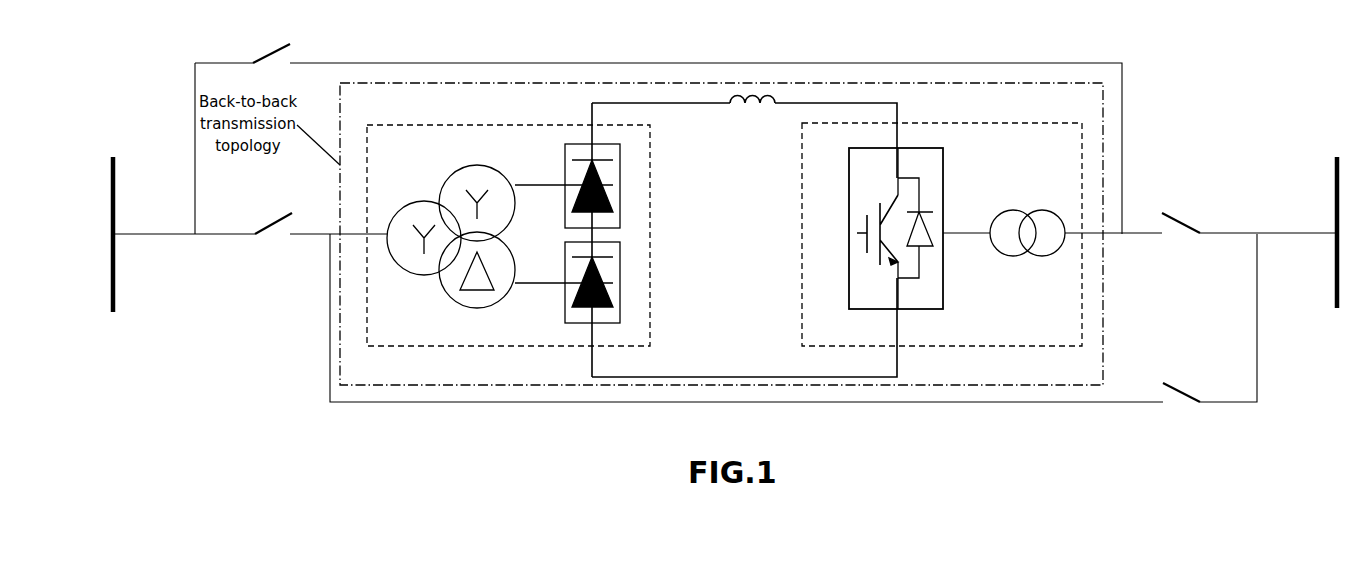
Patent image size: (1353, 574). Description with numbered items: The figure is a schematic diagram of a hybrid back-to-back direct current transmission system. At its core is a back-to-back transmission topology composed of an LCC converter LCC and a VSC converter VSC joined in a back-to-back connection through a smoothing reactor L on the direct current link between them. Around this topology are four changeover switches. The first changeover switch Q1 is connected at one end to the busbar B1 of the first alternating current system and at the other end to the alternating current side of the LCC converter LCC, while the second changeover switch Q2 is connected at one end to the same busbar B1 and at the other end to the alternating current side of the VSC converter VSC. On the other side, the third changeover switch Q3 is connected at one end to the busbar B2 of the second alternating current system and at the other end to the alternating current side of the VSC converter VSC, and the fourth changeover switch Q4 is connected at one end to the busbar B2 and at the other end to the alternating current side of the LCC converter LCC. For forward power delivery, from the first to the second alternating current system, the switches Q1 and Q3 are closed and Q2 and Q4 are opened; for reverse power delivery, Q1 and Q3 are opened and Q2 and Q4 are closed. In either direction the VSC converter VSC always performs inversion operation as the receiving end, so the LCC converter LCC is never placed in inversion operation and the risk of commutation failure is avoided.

The busbar of first alternating current system B1 is at (112, 223).
The busbar of second alternating current system B2 is at (1338, 221).
The first changeover switch Q1 is at (273, 214).
The second changeover switch Q2 is at (271, 45).
The third changeover switch Q3 is at (1181, 212).
The fourth changeover switch Q4 is at (1181, 382).
The smoothing reactor L is at (752, 117).
The LCC converter LCC is at (650, 206).
The VSC converter VSC is at (802, 233).